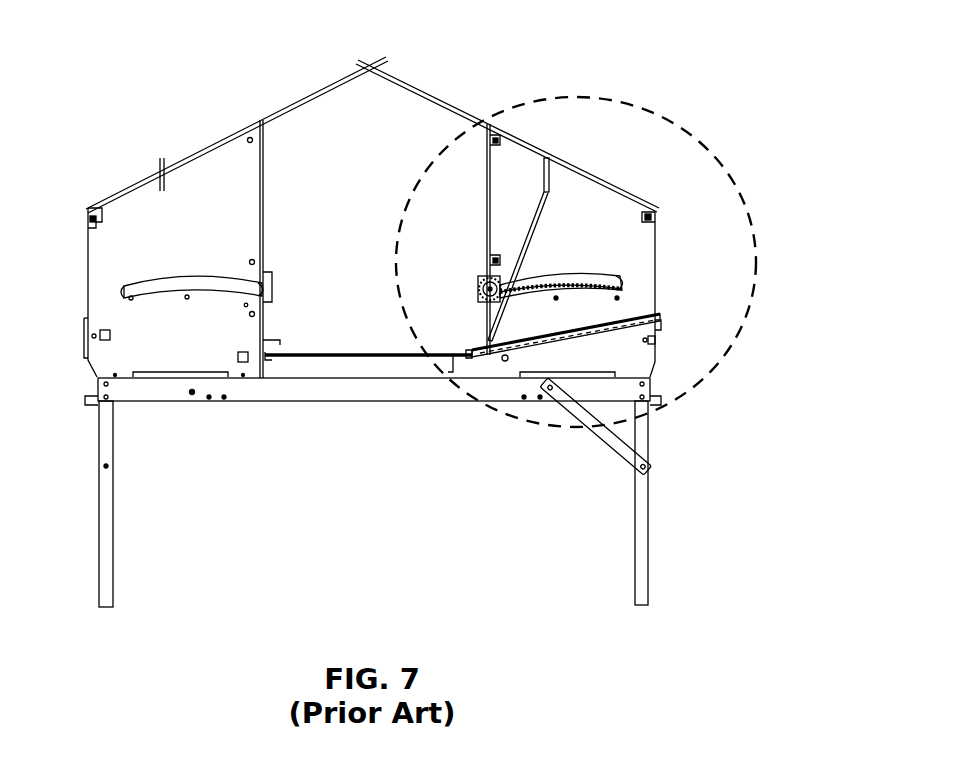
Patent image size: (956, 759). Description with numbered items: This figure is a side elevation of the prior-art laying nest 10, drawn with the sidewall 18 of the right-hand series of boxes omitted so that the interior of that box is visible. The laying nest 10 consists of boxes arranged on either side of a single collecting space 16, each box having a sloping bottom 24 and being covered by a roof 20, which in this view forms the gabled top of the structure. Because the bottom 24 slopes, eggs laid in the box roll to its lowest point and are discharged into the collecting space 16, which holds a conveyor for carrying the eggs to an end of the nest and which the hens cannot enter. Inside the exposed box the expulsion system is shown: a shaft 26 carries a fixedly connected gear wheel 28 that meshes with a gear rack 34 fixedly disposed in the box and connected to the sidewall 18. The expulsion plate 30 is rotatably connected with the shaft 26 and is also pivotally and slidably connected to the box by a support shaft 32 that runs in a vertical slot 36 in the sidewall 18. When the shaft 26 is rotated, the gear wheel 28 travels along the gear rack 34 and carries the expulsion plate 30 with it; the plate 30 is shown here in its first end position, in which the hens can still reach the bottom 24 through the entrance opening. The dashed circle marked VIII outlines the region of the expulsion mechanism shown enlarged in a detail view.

The laying nest 10 is at (446, 89).
The collecting space 16 is at (320, 276).
The sidewall 18 is at (172, 246).
The roof 20 is at (225, 140).
The bottom 24 is at (650, 315).
The shaft 26 is at (476, 296).
The gear wheel 28 is at (478, 282).
The expulsion plate 30 is at (527, 237).
The support shaft 32 is at (548, 182).
The gear rack 34 is at (620, 274).
The vertical slot 36 is at (548, 172).
The detail view circle VIII is at (680, 128).